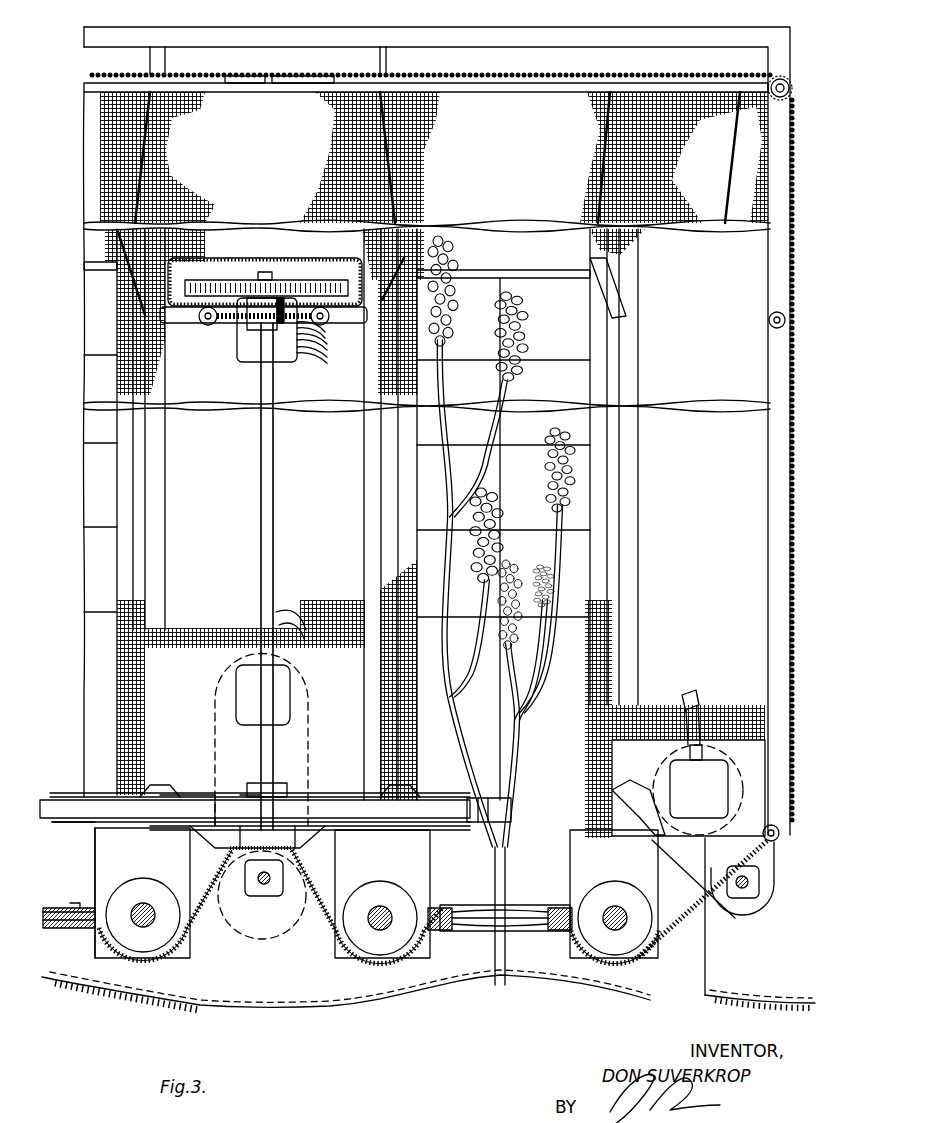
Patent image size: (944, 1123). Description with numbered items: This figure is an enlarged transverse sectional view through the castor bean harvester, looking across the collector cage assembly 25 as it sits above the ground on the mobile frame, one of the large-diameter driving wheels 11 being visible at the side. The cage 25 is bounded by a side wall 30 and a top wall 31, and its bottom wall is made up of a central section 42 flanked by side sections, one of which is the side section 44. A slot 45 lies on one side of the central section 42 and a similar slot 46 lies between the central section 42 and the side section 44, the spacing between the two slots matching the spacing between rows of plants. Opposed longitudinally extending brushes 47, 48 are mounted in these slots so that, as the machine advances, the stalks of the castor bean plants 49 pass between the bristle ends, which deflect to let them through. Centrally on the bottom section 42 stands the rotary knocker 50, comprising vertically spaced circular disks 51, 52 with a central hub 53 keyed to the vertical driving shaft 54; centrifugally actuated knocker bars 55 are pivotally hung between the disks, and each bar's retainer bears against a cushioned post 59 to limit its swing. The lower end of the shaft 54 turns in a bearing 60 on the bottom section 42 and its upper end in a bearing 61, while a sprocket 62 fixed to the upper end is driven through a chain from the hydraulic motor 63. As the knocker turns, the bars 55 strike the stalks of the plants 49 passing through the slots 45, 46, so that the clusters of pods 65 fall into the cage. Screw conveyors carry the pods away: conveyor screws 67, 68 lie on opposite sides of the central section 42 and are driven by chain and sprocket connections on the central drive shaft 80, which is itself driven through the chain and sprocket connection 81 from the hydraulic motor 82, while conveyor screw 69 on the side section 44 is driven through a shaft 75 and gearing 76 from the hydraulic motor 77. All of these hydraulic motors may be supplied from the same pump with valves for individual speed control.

The driving wheel 11 is at (705, 975).
The collector cage assembly 25 is at (796, 86).
The side wall 30 is at (790, 628).
The top wall 31 is at (605, 78).
The central section 42 is at (206, 918).
The side section 44 is at (605, 956).
The slot 45 is at (69, 893).
The slot 46 is at (535, 860).
The brush 47 is at (474, 912).
The brush 48 is at (58, 912).
The castor bean plant 49 is at (500, 955).
The rotary knocker 50 is at (205, 795).
The circular disk 51 is at (226, 798).
The circular disk 52 is at (92, 822).
The central hub 53 is at (278, 790).
The vertical driving shaft 54 is at (274, 565).
The knocker bar 55 is at (48, 800).
The cushioned post 59 is at (148, 797).
The bearing 60 is at (330, 838).
The bearing 61 is at (255, 332).
The sprocket 62 is at (305, 282).
The hydraulic motor 63 is at (298, 360).
The clusters of pods 65 is at (498, 327).
The conveyor screw 67 is at (126, 895).
The conveyor screw 68 is at (388, 890).
The conveyor screw 69 is at (610, 890).
The shaft 75 is at (750, 882).
The gearing 76 is at (748, 802).
The hydraulic motor 77 is at (722, 770).
The central drive shaft 80 is at (268, 882).
The chain and sprocket connection 81 is at (308, 740).
The hydraulic motor 82 is at (284, 688).